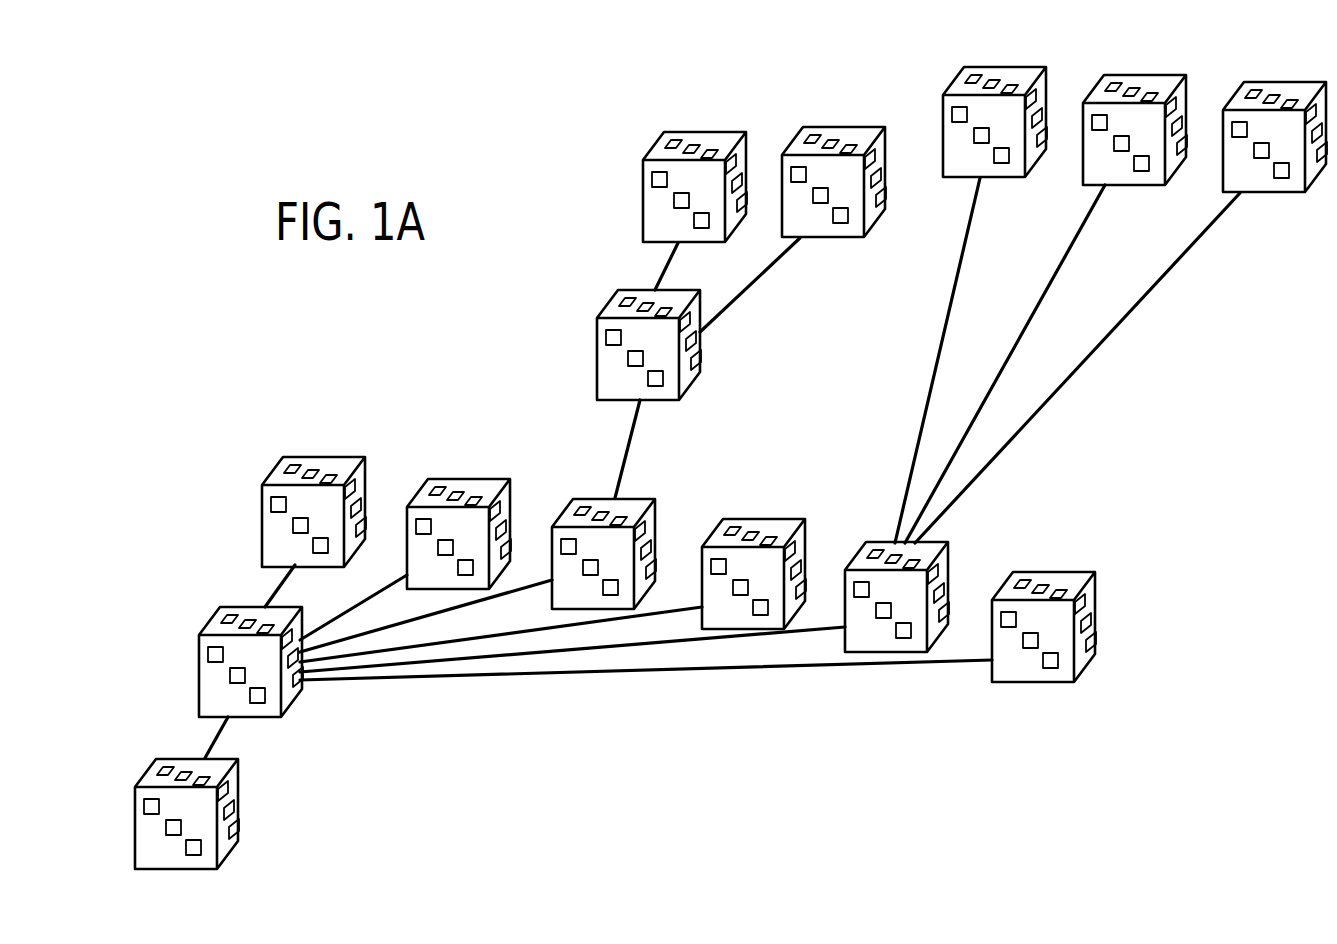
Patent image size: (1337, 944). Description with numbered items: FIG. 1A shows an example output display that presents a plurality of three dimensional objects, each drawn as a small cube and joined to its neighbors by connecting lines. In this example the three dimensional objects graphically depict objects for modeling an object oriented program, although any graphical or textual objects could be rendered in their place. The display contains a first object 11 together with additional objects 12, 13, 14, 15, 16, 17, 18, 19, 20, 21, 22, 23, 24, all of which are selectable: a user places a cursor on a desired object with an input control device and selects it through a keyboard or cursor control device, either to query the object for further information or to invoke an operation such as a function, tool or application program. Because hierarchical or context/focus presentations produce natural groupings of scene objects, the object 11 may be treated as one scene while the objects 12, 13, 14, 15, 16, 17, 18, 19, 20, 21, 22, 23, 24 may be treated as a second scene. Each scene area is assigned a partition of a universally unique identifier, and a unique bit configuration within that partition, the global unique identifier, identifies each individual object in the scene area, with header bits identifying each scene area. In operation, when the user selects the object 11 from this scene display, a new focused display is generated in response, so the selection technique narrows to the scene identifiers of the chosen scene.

The object 11 is at (172, 760).
The object 12 is at (240, 608).
The object 13 is at (308, 457).
The object 14 is at (460, 478).
The object 15 is at (592, 498).
The object 16 is at (752, 517).
The object 17 is at (876, 543).
The object 18 is at (1046, 572).
The object 19 is at (629, 290).
The object 20 is at (698, 130).
The object 21 is at (839, 127).
The object 22 is at (1001, 68).
The object 23 is at (1141, 76).
The object 24 is at (1283, 82).